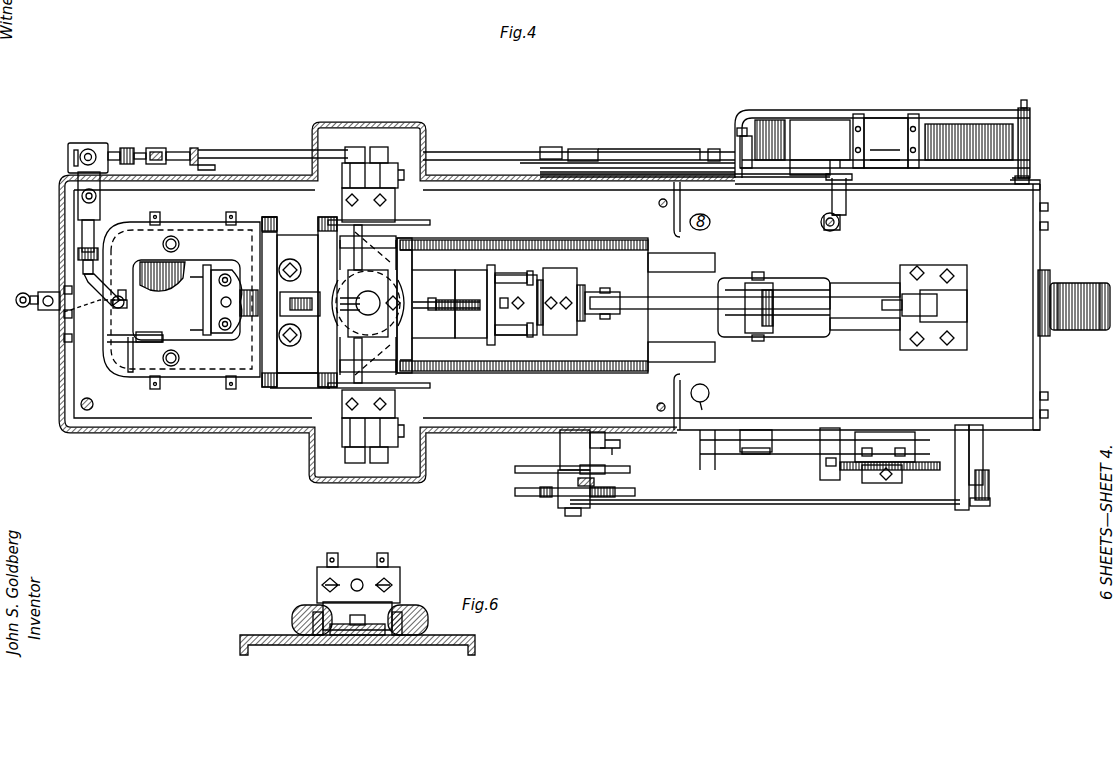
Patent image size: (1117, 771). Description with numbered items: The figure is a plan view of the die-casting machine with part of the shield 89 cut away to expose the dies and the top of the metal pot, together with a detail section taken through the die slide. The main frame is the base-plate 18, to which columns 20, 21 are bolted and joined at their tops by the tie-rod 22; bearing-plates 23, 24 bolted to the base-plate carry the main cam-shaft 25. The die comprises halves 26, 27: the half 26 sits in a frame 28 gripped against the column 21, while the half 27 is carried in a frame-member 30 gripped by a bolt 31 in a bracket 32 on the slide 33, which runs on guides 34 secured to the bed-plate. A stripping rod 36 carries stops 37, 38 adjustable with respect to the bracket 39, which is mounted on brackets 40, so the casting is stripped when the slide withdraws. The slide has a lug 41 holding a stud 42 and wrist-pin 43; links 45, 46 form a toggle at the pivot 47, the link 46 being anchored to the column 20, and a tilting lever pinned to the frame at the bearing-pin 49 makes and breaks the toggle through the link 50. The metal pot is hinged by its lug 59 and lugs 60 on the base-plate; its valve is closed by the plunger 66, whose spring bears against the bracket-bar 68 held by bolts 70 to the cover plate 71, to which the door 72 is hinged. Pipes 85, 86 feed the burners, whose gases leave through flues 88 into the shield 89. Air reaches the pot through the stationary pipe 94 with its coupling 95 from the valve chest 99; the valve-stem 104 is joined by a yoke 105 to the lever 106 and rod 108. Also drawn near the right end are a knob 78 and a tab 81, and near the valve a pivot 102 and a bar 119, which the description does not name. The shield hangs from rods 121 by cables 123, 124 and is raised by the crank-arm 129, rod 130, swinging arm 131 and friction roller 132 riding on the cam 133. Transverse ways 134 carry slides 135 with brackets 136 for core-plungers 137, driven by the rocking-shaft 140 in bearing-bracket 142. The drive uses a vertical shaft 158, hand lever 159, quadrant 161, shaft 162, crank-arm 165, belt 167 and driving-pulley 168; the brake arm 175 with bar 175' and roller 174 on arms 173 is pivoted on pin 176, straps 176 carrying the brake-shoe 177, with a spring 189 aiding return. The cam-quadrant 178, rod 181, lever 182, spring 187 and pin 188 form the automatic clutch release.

In FIG. 4, the base-plate 18 is at (146, 418).
In FIG. 6, the base-plate 18 is at (252, 635).
In FIG. 4, the column 20 is at (955, 300).
In FIG. 4, the column 21 is at (320, 315).
In FIG. 4, the tie-rod 22 is at (882, 305).
In FIG. 4, the bearing-plate 23 is at (1040, 432).
In FIG. 4, the bearing-plate 24 is at (1040, 185).
In FIG. 4, the main cam-shaft 25 is at (903, 448).
In FIG. 4, the die half 26 is at (320, 270).
In FIG. 4, the die half 27 is at (405, 262).
In FIG. 4, the frame 28 is at (330, 335).
In FIG. 4, the frame-member 30 is at (398, 278).
In FIG. 4, the bolt 31 is at (398, 300).
In FIG. 4, the bracket 32 is at (404, 310).
In FIG. 4, the slide 33 is at (596, 248).
In FIG. 6, the slide 33 is at (420, 612).
In FIG. 4, the guides 34 is at (714, 258).
In FIG. 6, the guides 34 is at (318, 625).
In FIG. 4, the rod 36 is at (450, 304).
In FIG. 4, the stop 37 is at (442, 295).
In FIG. 4, the stop 38 is at (516, 305).
In FIG. 4, the bracket 39 is at (493, 345).
In FIG. 6, the bracket 39 is at (400, 578).
In FIG. 4, the brackets 40 is at (505, 275).
In FIG. 6, the brackets 40 is at (338, 556).
In FIG. 4, the lug 41 is at (568, 290).
In FIG. 4, the stud 42 is at (581, 322).
In FIG. 4, the wrist-pin 43 is at (606, 290).
In FIG. 4, the link 45 is at (670, 297).
In FIG. 4, the link 46 is at (851, 287).
In FIG. 4, the pivot 47 is at (758, 278).
In FIG. 4, the bearing-pin 49 is at (1046, 278).
In FIG. 4, the link 50 is at (762, 305).
In FIG. 4, the lug 59 is at (48, 311).
In FIG. 4, the lugs 60 is at (84, 280).
In FIG. 4, the plunger 66 is at (226, 307).
In FIG. 4, the bracket-bar 68 is at (212, 300).
In FIG. 4, the bolts 70 is at (225, 331).
In FIG. 4, the cover plate 71 is at (222, 268).
In FIG. 4, the cover 72 is at (186, 301).
In FIG. 4, the knob 78 is at (1075, 283).
In FIG. 4, the tab 81 is at (248, 318).
In FIG. 4, the pipe 85 is at (64, 338).
In FIG. 4, the pipe 86 is at (22, 308).
In FIG. 4, the flues 88 is at (172, 236).
In FIG. 4, the shield 89 is at (216, 431).
In FIG. 4, the air pipe 94 is at (78, 250).
In FIG. 4, the coupling 95 is at (82, 223).
In FIG. 4, the valve chest 99 is at (68, 155).
In FIG. 4, the pivot 102 is at (88, 150).
In FIG. 4, the valve-stem 104 is at (128, 148).
In FIG. 4, the yoke 105 is at (155, 148).
In FIG. 4, the lever 106 is at (172, 151).
In FIG. 4, the rod 108 is at (505, 145).
In FIG. 4, the bar 119 is at (195, 150).
In FIG. 4, the rods 121 is at (96, 197).
In FIG. 4, the wire cable 123 is at (709, 390).
In FIG. 4, the wire cable 124 is at (719, 406).
In FIG. 4, the crank-arm 129 is at (620, 445).
In FIG. 4, the rod 130 is at (783, 456).
In FIG. 4, the swinging arm 131 is at (828, 470).
In FIG. 4, the friction roller 132 is at (865, 484).
In FIG. 4, the cam 133 is at (922, 470).
In FIG. 4, the ways 134 is at (380, 150).
In FIG. 4, the slide 135 is at (342, 168).
In FIG. 4, the bracket 136 is at (350, 216).
In FIG. 4, the core-plunger 137 is at (380, 222).
In FIG. 4, the rocking-shaft 140 is at (448, 176).
In FIG. 4, the bearing-bracket 142 is at (760, 438).
In FIG. 4, the vertical shaft 158 is at (840, 222).
In FIG. 4, the hand lever 159 is at (600, 485).
In FIG. 4, the quadrant 161 is at (515, 469).
In FIG. 4, the shaft 162 is at (570, 516).
In FIG. 4, the crank-arm 165 is at (846, 203).
In FIG. 4, the belt 167 is at (748, 118).
In FIG. 4, the driving-pulley 168 is at (780, 125).
In FIG. 4, the arms 173 is at (553, 148).
In FIG. 4, the roller 174 is at (590, 151).
In FIG. 4, the arm 175 is at (637, 150).
In FIG. 4, the bar 175' is at (956, 110).
In FIG. 4, the metal straps 176 is at (856, 114).
In FIG. 4, the brake-shoe 177 is at (876, 122).
In FIG. 4, the cam-quadrant 178 is at (515, 493).
In FIG. 4, the rod 181 is at (795, 180).
In FIG. 4, the lever 182 is at (980, 506).
In FIG. 4, the spring 187 is at (989, 480).
In FIG. 4, the pin 188 is at (983, 453).
In FIG. 4, the spring 189 is at (818, 158).